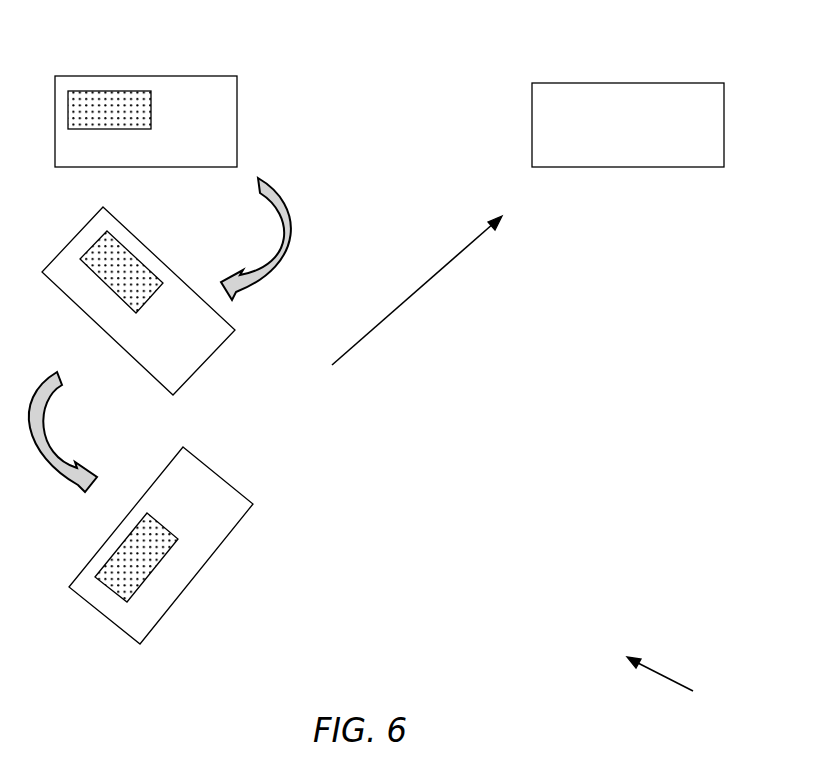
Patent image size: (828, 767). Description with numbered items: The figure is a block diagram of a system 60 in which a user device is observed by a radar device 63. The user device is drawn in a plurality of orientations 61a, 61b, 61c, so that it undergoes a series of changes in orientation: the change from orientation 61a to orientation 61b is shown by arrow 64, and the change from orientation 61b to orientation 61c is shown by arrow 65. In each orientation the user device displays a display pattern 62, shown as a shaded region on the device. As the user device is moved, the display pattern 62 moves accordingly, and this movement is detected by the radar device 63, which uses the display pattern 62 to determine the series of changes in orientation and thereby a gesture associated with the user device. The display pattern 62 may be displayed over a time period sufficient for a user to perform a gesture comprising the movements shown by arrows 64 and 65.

The system 60 is at (678, 682).
The orientation 61a is at (237, 100).
The orientation 61b is at (213, 353).
The orientation 61c is at (212, 468).
The display pattern 62 is at (88, 91).
The radar device 63 is at (592, 83).
The arrow 64 is at (288, 193).
The arrow 65 is at (40, 460).